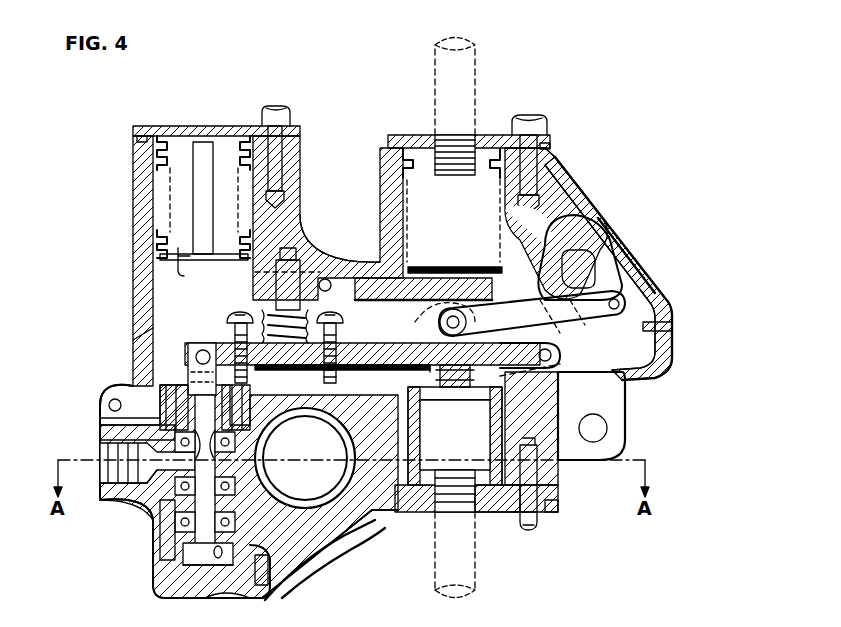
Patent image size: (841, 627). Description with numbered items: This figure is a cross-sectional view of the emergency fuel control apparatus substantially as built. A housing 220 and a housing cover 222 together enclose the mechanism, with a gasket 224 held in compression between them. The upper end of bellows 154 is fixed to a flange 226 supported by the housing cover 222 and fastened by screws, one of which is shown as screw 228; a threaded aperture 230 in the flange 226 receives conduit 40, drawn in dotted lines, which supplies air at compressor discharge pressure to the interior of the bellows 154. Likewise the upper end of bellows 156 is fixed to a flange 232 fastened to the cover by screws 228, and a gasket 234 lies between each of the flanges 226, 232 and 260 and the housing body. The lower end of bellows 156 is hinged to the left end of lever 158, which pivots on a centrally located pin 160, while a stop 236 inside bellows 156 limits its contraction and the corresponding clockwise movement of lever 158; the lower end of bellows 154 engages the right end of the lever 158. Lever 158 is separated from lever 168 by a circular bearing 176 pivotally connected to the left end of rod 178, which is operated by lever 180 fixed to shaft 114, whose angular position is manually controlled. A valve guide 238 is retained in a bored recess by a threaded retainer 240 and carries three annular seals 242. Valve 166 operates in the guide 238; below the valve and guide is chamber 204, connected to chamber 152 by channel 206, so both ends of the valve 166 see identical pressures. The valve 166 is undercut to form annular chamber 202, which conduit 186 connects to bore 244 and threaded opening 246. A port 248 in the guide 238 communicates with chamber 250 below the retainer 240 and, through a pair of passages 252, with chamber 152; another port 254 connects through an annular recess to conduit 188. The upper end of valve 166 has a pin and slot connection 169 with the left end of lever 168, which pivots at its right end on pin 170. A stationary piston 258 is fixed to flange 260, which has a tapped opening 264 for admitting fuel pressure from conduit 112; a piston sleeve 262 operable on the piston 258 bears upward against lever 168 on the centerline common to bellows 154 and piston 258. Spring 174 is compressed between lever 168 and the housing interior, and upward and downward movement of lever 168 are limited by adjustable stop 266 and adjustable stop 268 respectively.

The conduit 40 is at (478, 68).
The conduit 112 is at (480, 585).
The shaft 114 is at (585, 238).
The chamber 152 is at (393, 401).
The bellows 154 is at (420, 262).
The bellows 156 is at (157, 172).
The lever 158 is at (383, 197).
The pin 160 is at (322, 278).
The valve 166 is at (200, 390).
The lever 168 is at (553, 350).
The pin and slot connection 169 is at (140, 337).
The pin 170 is at (560, 365).
The spring 174 is at (262, 312).
The circular bearing 176 is at (438, 330).
The rod 178 is at (532, 313).
The lever 180 is at (615, 248).
The conduit 186 is at (235, 470).
The conduit 188 is at (250, 585).
The annular chamber 202 is at (100, 455).
The chamber 204 is at (160, 560).
The channel 206 is at (205, 585).
The housing 220 is at (633, 375).
The housing cover 222 is at (580, 192).
The gasket 224 is at (674, 325).
The flange 226 is at (476, 145).
The screw 228 is at (288, 124).
The threaded aperture 230 is at (448, 150).
The flange 232 is at (158, 128).
The gasket 234 is at (137, 140).
The stop 236 is at (200, 182).
The valve guide 238 is at (178, 532).
The threaded retainer 240 is at (104, 410).
The annular seal 242 is at (140, 500).
The bore 244 is at (300, 470).
The threaded opening 246 is at (100, 478).
The port 248 is at (160, 445).
The chamber 250 is at (100, 418).
The passages 252 is at (160, 400).
The port 254 is at (262, 470).
The stationary piston 258 is at (455, 420).
The flange 260 is at (505, 515).
The piston sleeve 262 is at (415, 412).
The tapped opening 264 is at (445, 515).
The adjustable stop 266 is at (336, 322).
The adjustable stop 268 is at (233, 322).